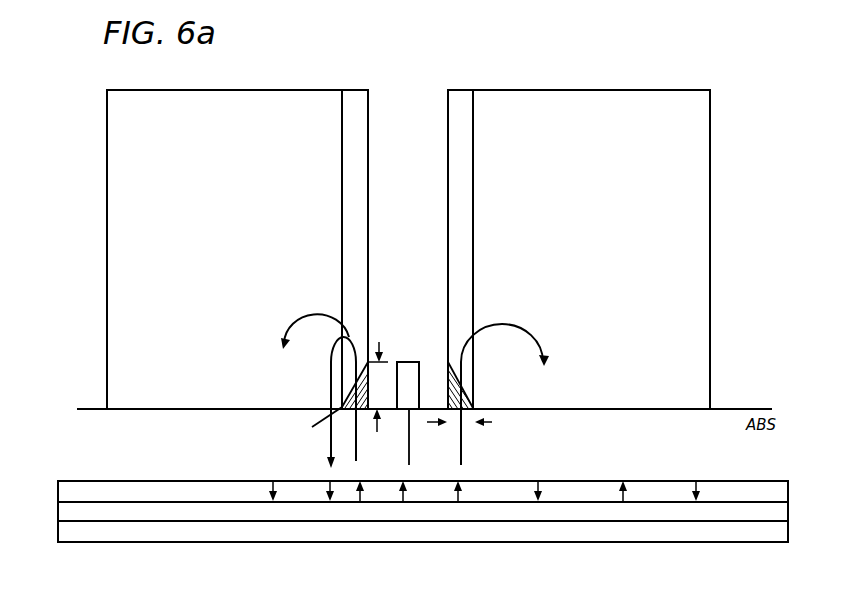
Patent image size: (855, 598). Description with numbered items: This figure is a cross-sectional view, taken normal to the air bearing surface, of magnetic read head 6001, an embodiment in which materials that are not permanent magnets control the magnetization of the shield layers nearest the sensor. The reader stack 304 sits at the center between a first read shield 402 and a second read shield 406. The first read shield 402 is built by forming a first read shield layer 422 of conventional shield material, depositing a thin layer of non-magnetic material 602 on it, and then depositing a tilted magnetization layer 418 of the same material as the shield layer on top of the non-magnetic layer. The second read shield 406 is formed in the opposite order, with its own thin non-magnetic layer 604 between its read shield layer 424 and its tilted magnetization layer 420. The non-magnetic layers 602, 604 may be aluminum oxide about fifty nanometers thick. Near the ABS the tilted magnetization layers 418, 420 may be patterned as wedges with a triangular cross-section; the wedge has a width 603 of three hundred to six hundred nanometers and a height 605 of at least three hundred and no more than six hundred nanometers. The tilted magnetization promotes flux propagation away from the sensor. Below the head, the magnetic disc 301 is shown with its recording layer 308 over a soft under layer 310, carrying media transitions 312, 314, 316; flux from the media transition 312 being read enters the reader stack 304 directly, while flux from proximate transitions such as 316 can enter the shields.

The first read shield 402 is at (368, 88).
The second read shield 406 is at (712, 88).
The first read shield layer 422 is at (224, 249).
The read shield layer 424 is at (591, 249).
The thin layer of non-magnetic material 602 is at (354, 127).
The thin non-magnetic layer 604 is at (456, 111).
The magnetic read head 6001 is at (724, 186).
The reader stack 304 is at (416, 362).
The tilted magnetization layer 418 is at (344, 391).
The tilted magnetization layer 420 is at (465, 398).
The height of the wedge 605 is at (385, 388).
The width of the wedge 603 is at (470, 434).
The magnetic disc 301 is at (146, 551).
The recording layer 308 is at (69, 490).
The soft under layer 310 is at (72, 530).
The media transition 314 is at (352, 503).
The media transition 312 is at (401, 504).
The media transition 316 is at (459, 504).